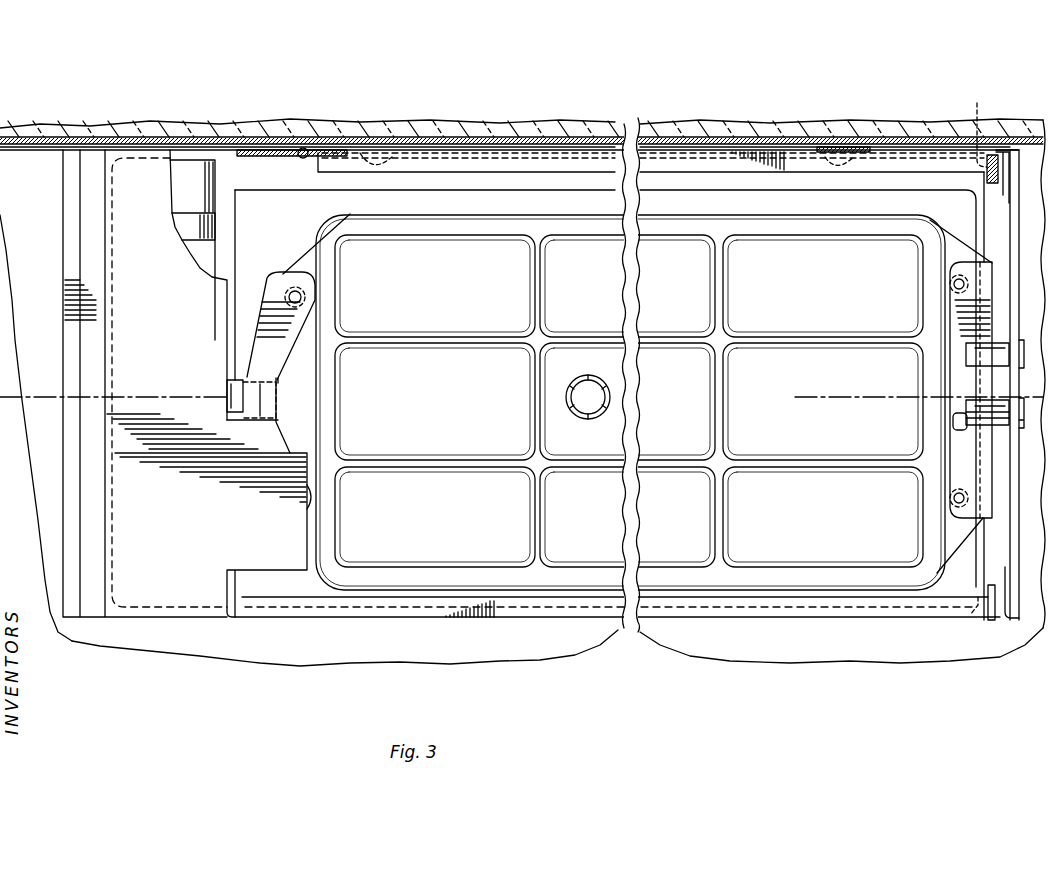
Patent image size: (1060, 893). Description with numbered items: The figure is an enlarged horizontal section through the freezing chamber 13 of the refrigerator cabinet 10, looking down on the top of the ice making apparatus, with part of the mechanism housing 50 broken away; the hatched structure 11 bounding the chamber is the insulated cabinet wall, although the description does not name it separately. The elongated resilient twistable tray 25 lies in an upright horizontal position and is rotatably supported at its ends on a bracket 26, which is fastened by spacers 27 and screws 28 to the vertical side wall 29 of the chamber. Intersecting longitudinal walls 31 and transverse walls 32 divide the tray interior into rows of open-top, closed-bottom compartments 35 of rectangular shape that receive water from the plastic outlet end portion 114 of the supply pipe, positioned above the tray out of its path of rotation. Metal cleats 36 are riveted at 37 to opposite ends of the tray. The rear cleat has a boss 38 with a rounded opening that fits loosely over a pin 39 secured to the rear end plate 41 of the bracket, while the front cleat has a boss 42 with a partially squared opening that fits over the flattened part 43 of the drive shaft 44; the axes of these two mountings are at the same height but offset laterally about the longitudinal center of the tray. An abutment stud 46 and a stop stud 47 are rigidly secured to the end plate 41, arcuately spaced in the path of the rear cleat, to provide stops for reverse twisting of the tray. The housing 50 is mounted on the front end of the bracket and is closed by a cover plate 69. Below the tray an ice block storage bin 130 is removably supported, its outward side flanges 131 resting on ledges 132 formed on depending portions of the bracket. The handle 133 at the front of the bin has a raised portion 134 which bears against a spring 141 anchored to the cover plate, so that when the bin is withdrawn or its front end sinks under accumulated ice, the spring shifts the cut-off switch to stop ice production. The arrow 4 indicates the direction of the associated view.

The arrow direction 4 is at (973, 437).
The cabinet 10 is at (738, 118).
The ceiling structure 11 is at (880, 127).
The freezing chamber 13 is at (815, 647).
The tray 25 is at (880, 588).
The bracket 26 is at (492, 152).
The spacers 27 is at (350, 150).
The screws 28 is at (378, 166).
The vertical side wall 29 is at (180, 140).
The longitudinal upstanding walls 31 is at (460, 340).
The transverse upstanding walls 32 is at (540, 290).
The compartments 35 is at (702, 353).
The metal cleats 36 is at (267, 280).
The rivets 37 is at (293, 288).
The boss 38 is at (970, 393).
The pin 39 is at (956, 428).
The rear end plate 41 is at (1013, 593).
The boss 42 is at (264, 396).
The flattened part 43 is at (279, 383).
The drive shaft 44 is at (230, 388).
The abutment stud 46 is at (968, 337).
The stop stud 47 is at (966, 408).
The housing 50 is at (147, 618).
The cover plate 69 is at (77, 197).
The outlet end portion 114 is at (593, 420).
The ice block storage bin 130 is at (970, 588).
The flanges 131 is at (977, 632).
The ledges 132 is at (302, 148).
The handle 133 is at (110, 243).
The raised portion 134 is at (198, 165).
The spring 141 is at (195, 222).